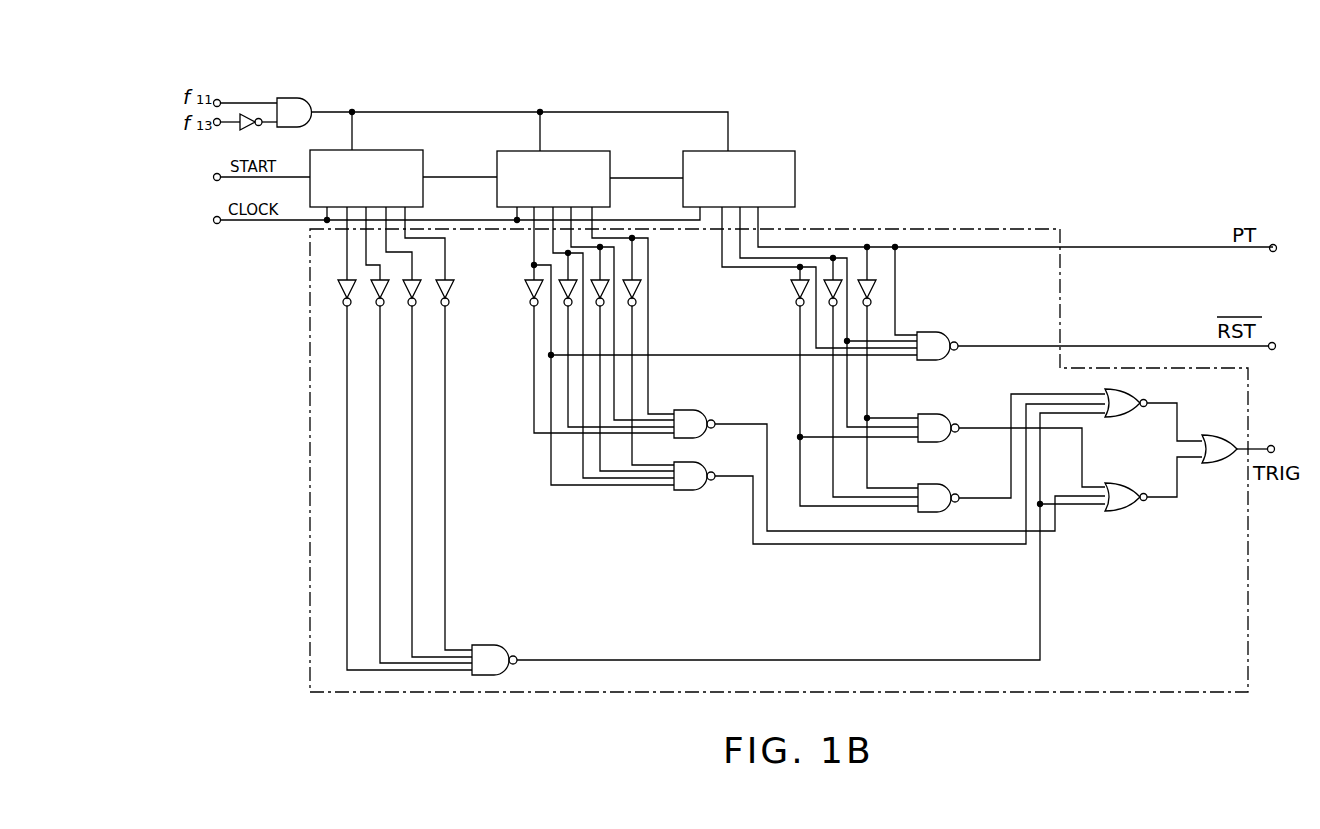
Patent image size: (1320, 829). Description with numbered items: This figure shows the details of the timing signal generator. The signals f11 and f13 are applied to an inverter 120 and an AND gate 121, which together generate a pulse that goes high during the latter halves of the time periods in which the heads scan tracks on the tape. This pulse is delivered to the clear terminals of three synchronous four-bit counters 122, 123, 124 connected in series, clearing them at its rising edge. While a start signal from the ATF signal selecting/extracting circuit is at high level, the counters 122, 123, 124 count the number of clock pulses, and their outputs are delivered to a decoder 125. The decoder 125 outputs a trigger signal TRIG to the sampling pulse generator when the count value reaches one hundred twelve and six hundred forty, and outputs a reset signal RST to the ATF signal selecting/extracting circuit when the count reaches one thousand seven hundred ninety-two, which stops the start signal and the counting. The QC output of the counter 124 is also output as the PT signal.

The inverter 120 is at (240, 128).
The AND gate 121 is at (296, 99).
The synchronous 4-bit counter 122 is at (372, 150).
The synchronous 4-bit counter 123 is at (562, 151).
The synchronous 4-bit counter 124 is at (757, 151).
The decoder 125 is at (400, 693).